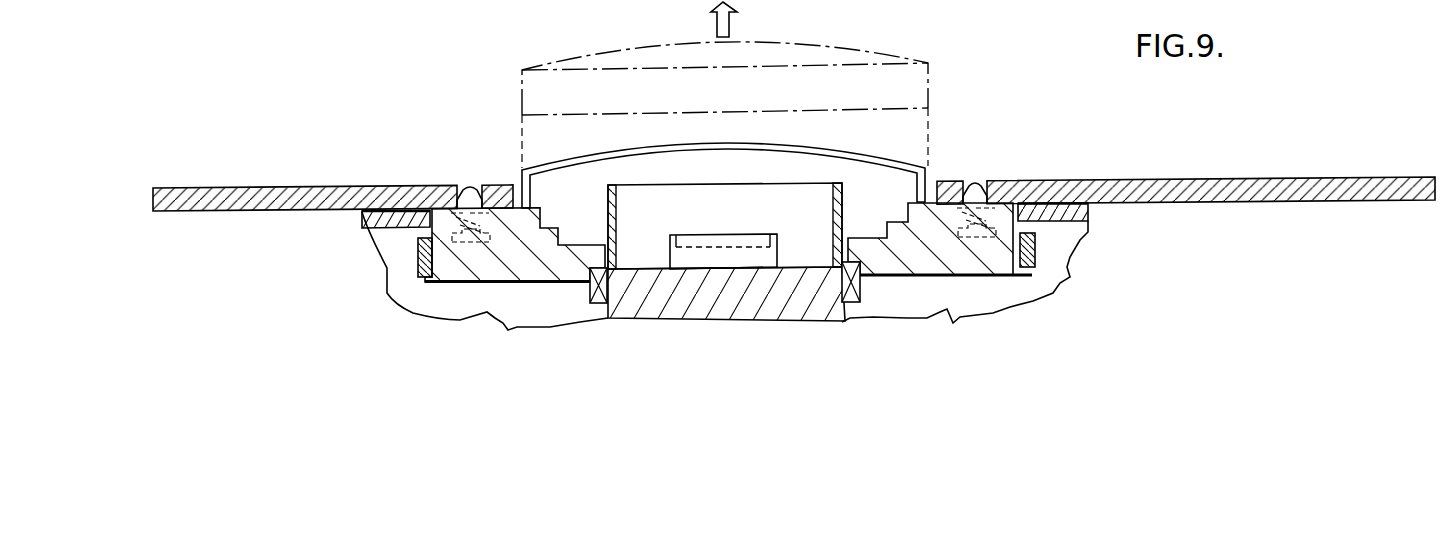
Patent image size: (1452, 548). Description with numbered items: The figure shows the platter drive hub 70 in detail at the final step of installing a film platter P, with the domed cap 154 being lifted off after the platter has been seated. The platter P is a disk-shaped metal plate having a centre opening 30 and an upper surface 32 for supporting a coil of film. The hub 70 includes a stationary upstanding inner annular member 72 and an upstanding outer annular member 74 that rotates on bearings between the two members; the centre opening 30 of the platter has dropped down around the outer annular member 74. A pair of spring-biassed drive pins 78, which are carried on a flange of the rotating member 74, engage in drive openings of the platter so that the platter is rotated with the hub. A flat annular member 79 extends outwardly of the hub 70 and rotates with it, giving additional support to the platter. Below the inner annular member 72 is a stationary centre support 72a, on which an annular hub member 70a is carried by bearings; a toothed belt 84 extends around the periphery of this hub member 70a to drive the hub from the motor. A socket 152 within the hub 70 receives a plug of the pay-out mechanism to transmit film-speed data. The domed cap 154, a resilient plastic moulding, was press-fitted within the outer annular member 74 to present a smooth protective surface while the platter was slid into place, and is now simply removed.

The domed cap 154 is at (932, 88).
The drive pins 78 is at (468, 184).
The centre opening 30 is at (930, 180).
The upper surface 32 is at (1137, 178).
The film platter P is at (794, 162).
The inner annular member 72 is at (620, 200).
The stationary centre support 72a is at (733, 292).
The socket 152 is at (763, 262).
The outer annular member 74 is at (520, 217).
The annular hub member 70a is at (558, 273).
The platter drive hub 70 is at (997, 292).
The flat annular member 79 is at (387, 222).
The toothed belt 84 is at (413, 257).